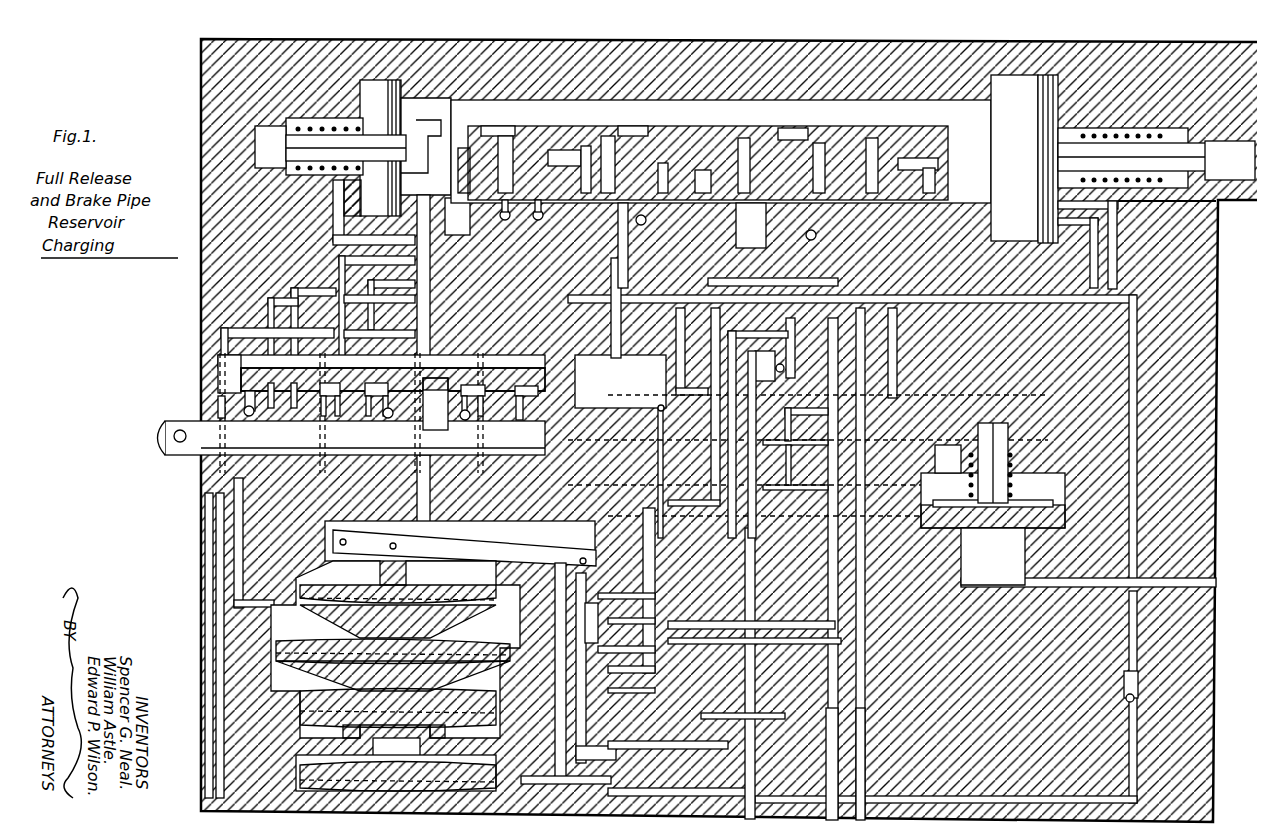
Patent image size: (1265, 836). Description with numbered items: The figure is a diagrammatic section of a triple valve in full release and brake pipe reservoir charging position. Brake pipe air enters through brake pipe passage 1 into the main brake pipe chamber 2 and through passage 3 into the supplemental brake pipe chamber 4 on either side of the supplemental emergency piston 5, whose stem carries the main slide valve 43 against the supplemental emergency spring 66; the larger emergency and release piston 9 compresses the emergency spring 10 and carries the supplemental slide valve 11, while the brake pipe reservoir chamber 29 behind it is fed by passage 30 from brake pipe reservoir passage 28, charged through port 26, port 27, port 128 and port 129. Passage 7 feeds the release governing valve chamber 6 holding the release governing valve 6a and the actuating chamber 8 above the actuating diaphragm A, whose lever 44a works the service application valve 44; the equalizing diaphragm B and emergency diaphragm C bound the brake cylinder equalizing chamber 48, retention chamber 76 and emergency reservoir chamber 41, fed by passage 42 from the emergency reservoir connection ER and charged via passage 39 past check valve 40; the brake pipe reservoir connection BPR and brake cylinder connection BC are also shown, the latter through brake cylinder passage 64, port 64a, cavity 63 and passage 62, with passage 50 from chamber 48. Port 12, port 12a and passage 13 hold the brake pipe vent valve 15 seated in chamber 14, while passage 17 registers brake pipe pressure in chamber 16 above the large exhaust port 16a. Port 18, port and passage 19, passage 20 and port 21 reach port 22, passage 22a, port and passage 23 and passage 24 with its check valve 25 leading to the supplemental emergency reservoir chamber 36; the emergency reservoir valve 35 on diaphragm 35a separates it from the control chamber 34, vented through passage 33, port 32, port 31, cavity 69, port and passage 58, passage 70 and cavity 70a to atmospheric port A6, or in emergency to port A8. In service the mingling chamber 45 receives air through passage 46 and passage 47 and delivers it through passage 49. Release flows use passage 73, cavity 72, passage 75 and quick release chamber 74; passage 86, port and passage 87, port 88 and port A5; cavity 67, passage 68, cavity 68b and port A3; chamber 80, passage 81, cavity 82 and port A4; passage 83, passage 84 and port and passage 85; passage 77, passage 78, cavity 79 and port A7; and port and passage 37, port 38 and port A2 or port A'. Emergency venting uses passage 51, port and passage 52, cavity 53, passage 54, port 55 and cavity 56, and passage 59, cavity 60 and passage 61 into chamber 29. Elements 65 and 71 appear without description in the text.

The brake pipe passage 1 is at (193, 792).
The main brake pipe chamber 2 is at (443, 20).
The passage 3 is at (322, 203).
The supplemental brake pipe chamber 4 is at (332, 149).
The supplemental emergency piston 5 is at (390, 110).
The release governing valve chamber 6 is at (232, 357).
The release governing valve 6a is at (185, 363).
The passage 7 is at (411, 198).
The actuating chamber 8 is at (358, 569).
The emergency and release piston 9 is at (1035, 88).
The emergency spring 10 is at (1130, 128).
The supplemental slide valve 11 is at (685, 122).
The port of supplemental slide valve 12 is at (620, 142).
The port of main slide valve 12a is at (575, 142).
The passage 13 is at (968, 463).
The brake pipe vent valve chamber 14 is at (993, 500).
The brake pipe vent valve 15 is at (1000, 527).
The chamber 16 is at (993, 556).
The large exhaust port 16a is at (1106, 580).
The passage 17 is at (981, 475).
The port of supplemental slide valve 18 is at (747, 142).
The port and passage of main slide valve 19 is at (743, 108).
The passage 20 is at (283, 282).
The port 21 is at (282, 415).
The port 22 is at (236, 419).
The passage 22a is at (258, 294).
The port and passage of main slide valve 23 is at (706, 108).
The passage 24 is at (1130, 327).
The check valve 25 is at (1127, 690).
The port of supplemental slide valve 26 is at (828, 142).
The port of main slide valve 27 is at (856, 108).
The brake pipe reservoir passage 28 is at (830, 560).
The brake pipe reservoir chamber 29 is at (1123, 158).
The passage 30 is at (1092, 214).
The port of supplemental slide valve 31 is at (978, 130).
The port of main slide valve 32 is at (998, 138).
The passage 33 is at (197, 520).
The emergency reservoir control chamber 34 is at (335, 772).
The emergency reservoir valve 35 is at (385, 772).
The diaphragm 35a is at (293, 772).
The supplemental emergency reservoir chamber 36 is at (460, 762).
The port and passage of supplemental slide valve 37 is at (784, 142).
The port of main slide valve 38 is at (807, 108).
The passage 39 is at (747, 733).
The check valve 40 is at (776, 360).
The emergency reservoir chamber 41 is at (398, 768).
The passage 42 is at (688, 782).
The main slide valve 43 is at (438, 20).
The service application valve 44 is at (612, 772).
The lever 44a is at (460, 543).
The mingling chamber 45 is at (500, 612).
The passage 46 is at (571, 533).
The passage 47 is at (785, 610).
The brake cylinder equalizing chamber 48 is at (393, 655).
The passage 49 is at (485, 573).
The passage 50 is at (494, 633).
The passage 51 is at (374, 212).
The port and passage of main slide valve 52 is at (470, 158).
The cavity of supplemental slide valve 53 is at (505, 108).
The passage of main slide valve 54 is at (500, 119).
The port of main slide valve 55 is at (596, 108).
The cavity of supplemental slide valve 56 is at (652, 122).
The port and passage of main slide valve 58 is at (1026, 134).
The passage 59 is at (903, 353).
The cavity of main slide valve 60 is at (919, 108).
The passage 61 is at (1110, 240).
The passage 62 is at (1090, 250).
The cavity in main slide valve 63 is at (751, 225).
The brake cylinder passage 64 is at (857, 680).
The port in main slide valve 64a is at (898, 183).
The valve chamber 65 is at (515, 122).
The supplemental emergency spring 66 is at (309, 146).
The cavity of supplemental slide valve 67 is at (875, 142).
The passage 68 is at (603, 495).
The cavity of release governing valve 68b is at (600, 364).
The cavity of supplemental slide valve 69 is at (957, 108).
The passage 70 is at (988, 204).
The cavity of release governing valve 70a is at (422, 360).
The passage 71 is at (305, 358).
The cavity of service valve 72 is at (668, 732).
The passage 73 is at (1180, 197).
The quick release chamber 74 is at (622, 377).
The passage 75 is at (587, 401).
The retention chamber 76 is at (395, 676).
The passage 77 is at (178, 592).
The passage 78 is at (328, 253).
The cavity in main slide valve 79 is at (553, 108).
The chamber of service application valve 80 is at (565, 554).
The passage 81 is at (646, 364).
The cavity of main slide valve 82 is at (637, 108).
The passage 83 is at (476, 678).
The passage 84 is at (476, 694).
The port and passage of service valve 85 is at (558, 772).
The passage 86 is at (638, 772).
The port and passage in main slide valve 87 is at (777, 108).
The port in main slide valve seat 88 is at (457, 216).
The port 128 is at (773, 288).
The port of main slide valve 129 is at (825, 145).
The actuating diaphragm A is at (321, 574).
The atmospheric port A' is at (341, 413).
The atmospheric port A2 is at (798, 228).
The atmospheric port A3 is at (454, 413).
The atmospheric port A4 is at (635, 245).
The atmospheric port A5 is at (504, 226).
The atmospheric port A6 is at (379, 416).
The atmospheric port A7 is at (536, 226).
The atmospheric port A8 is at (1014, 228).
The equalizing diaphragm B is at (286, 618).
The emergency diaphragm C is at (398, 704).
The emergency reservoir connection ER is at (749, 682).
The brake pipe reservoir connection BPR is at (827, 772).
The brake cylinder connection BC is at (874, 772).